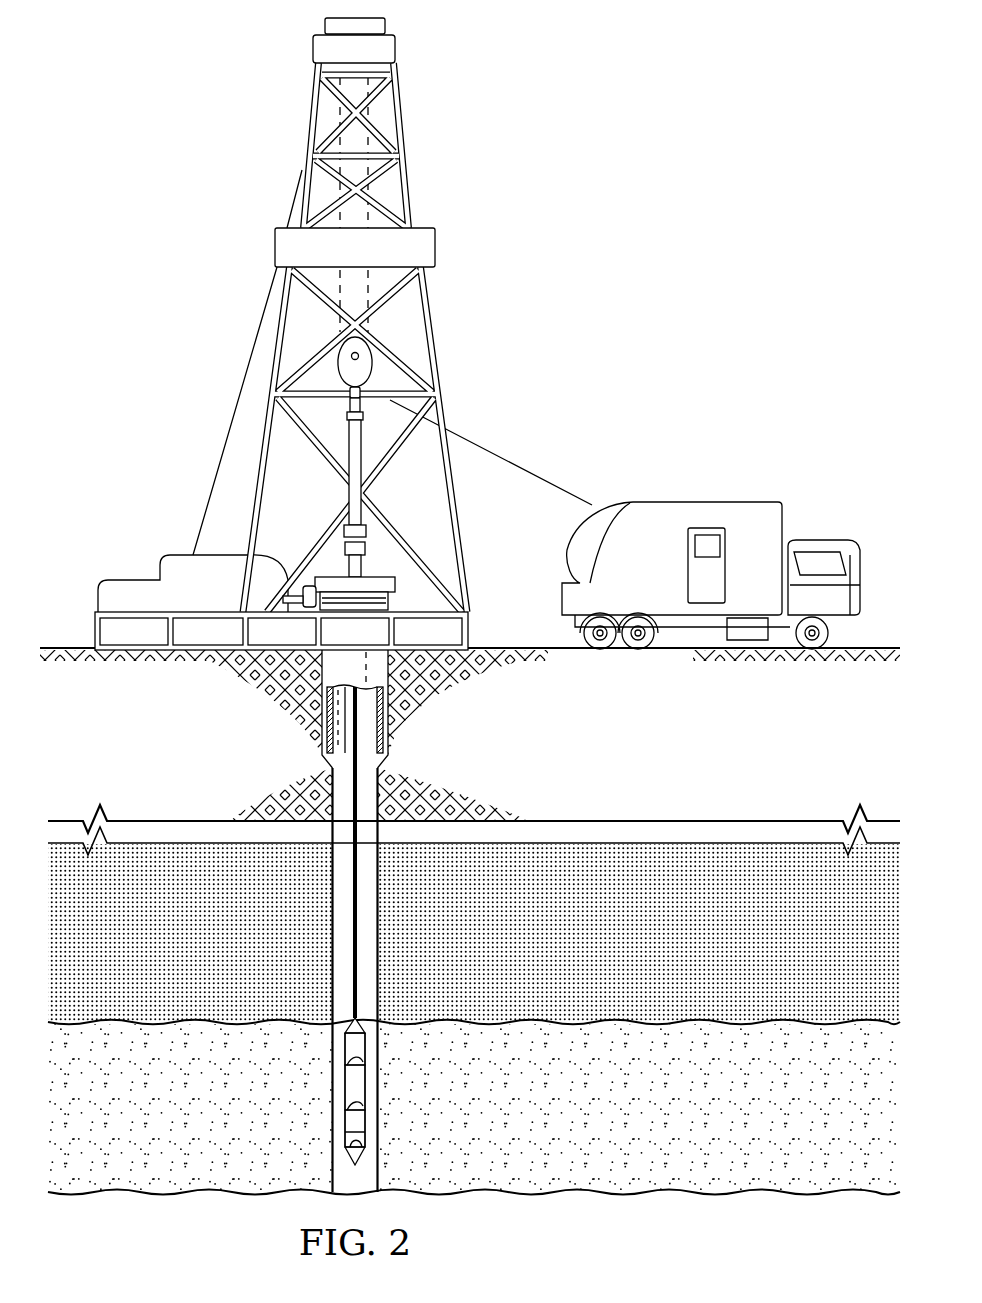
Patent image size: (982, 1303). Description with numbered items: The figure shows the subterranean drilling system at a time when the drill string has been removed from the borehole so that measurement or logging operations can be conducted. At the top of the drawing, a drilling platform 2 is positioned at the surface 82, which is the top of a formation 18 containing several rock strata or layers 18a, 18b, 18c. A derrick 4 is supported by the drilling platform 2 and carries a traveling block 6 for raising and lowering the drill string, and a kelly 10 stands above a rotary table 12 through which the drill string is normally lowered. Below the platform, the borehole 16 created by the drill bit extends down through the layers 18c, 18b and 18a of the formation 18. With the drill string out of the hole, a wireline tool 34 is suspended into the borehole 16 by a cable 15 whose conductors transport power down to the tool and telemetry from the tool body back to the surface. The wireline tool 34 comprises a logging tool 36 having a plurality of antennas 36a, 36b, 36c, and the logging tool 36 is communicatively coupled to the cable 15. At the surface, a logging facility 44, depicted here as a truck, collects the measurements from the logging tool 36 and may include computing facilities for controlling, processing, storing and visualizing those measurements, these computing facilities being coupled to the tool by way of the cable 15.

The drilling platform 2 is at (471, 615).
The derrick 4 is at (410, 143).
The traveling block 6 is at (377, 362).
The kelly 10 is at (363, 453).
The rotary table 12 is at (335, 577).
The cable 15 is at (357, 897).
The borehole 16 is at (378, 972).
The formation 18 is at (506, 921).
The rock stratum or layer 18a is at (474, 1109).
The rock stratum or layer 18b is at (615, 950).
The rock stratum or layer 18c is at (615, 758).
The wireline tool 34 is at (496, 1104).
The logging tool 36 is at (361, 1093).
The antenna 36a is at (360, 1066).
The antenna 36b is at (360, 1108).
The antenna 36c is at (360, 1132).
The logging facility 44 is at (713, 502).
The surface 82 is at (70, 648).